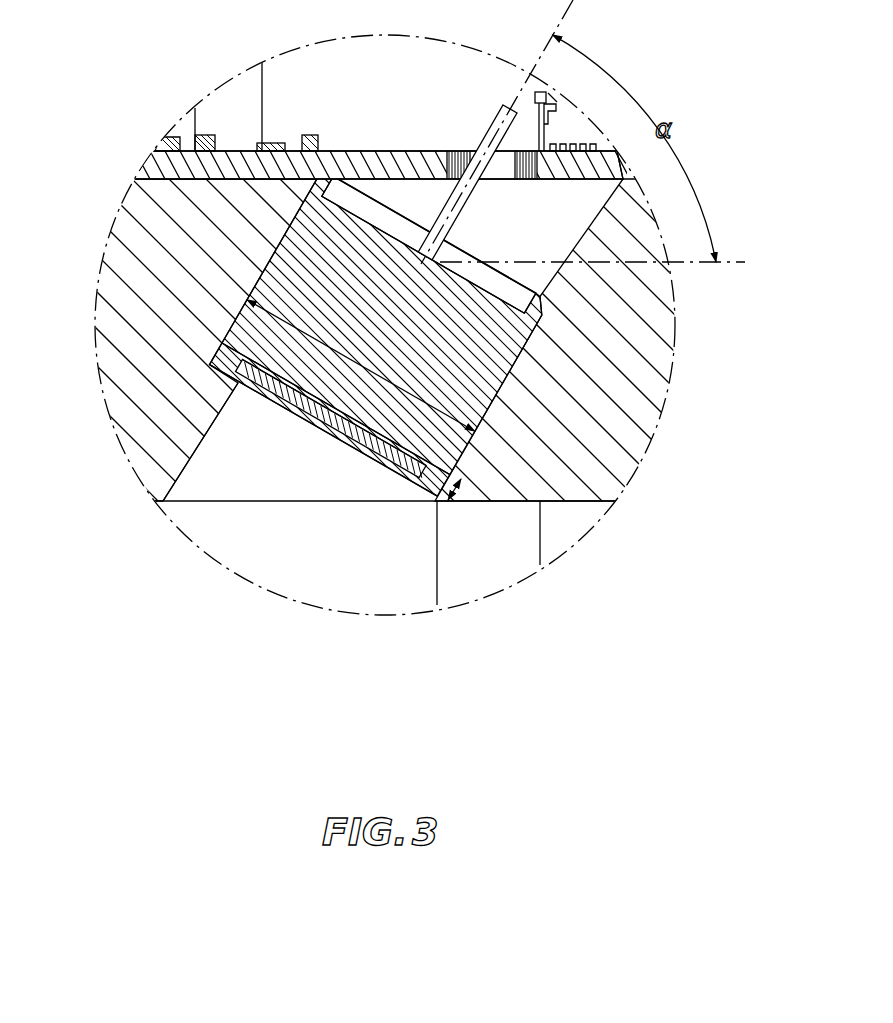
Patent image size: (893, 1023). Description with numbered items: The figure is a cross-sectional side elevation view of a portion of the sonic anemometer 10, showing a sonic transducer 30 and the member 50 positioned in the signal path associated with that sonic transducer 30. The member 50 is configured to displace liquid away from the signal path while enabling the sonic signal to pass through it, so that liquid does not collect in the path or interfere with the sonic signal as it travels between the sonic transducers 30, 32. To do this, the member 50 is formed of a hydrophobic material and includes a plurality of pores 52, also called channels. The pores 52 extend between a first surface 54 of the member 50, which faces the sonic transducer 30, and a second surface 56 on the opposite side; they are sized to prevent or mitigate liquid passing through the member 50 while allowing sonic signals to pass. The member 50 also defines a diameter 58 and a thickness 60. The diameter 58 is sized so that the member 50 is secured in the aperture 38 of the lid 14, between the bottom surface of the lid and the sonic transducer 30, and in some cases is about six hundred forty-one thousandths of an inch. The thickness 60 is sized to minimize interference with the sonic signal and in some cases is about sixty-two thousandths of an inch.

The sealing arrangement 10 is at (146, 100).
The lid 14 is at (604, 418).
The sonic transducer 30 is at (470, 357).
The sonic transducer 32 is at (470, 357).
The aperture 38 is at (240, 490).
The member 50 is at (220, 357).
The pores 52 is at (326, 428).
The first surface 54 is at (450, 466).
The second surface 56 is at (340, 448).
The diameter 58 is at (357, 364).
The thickness 60 is at (470, 502).